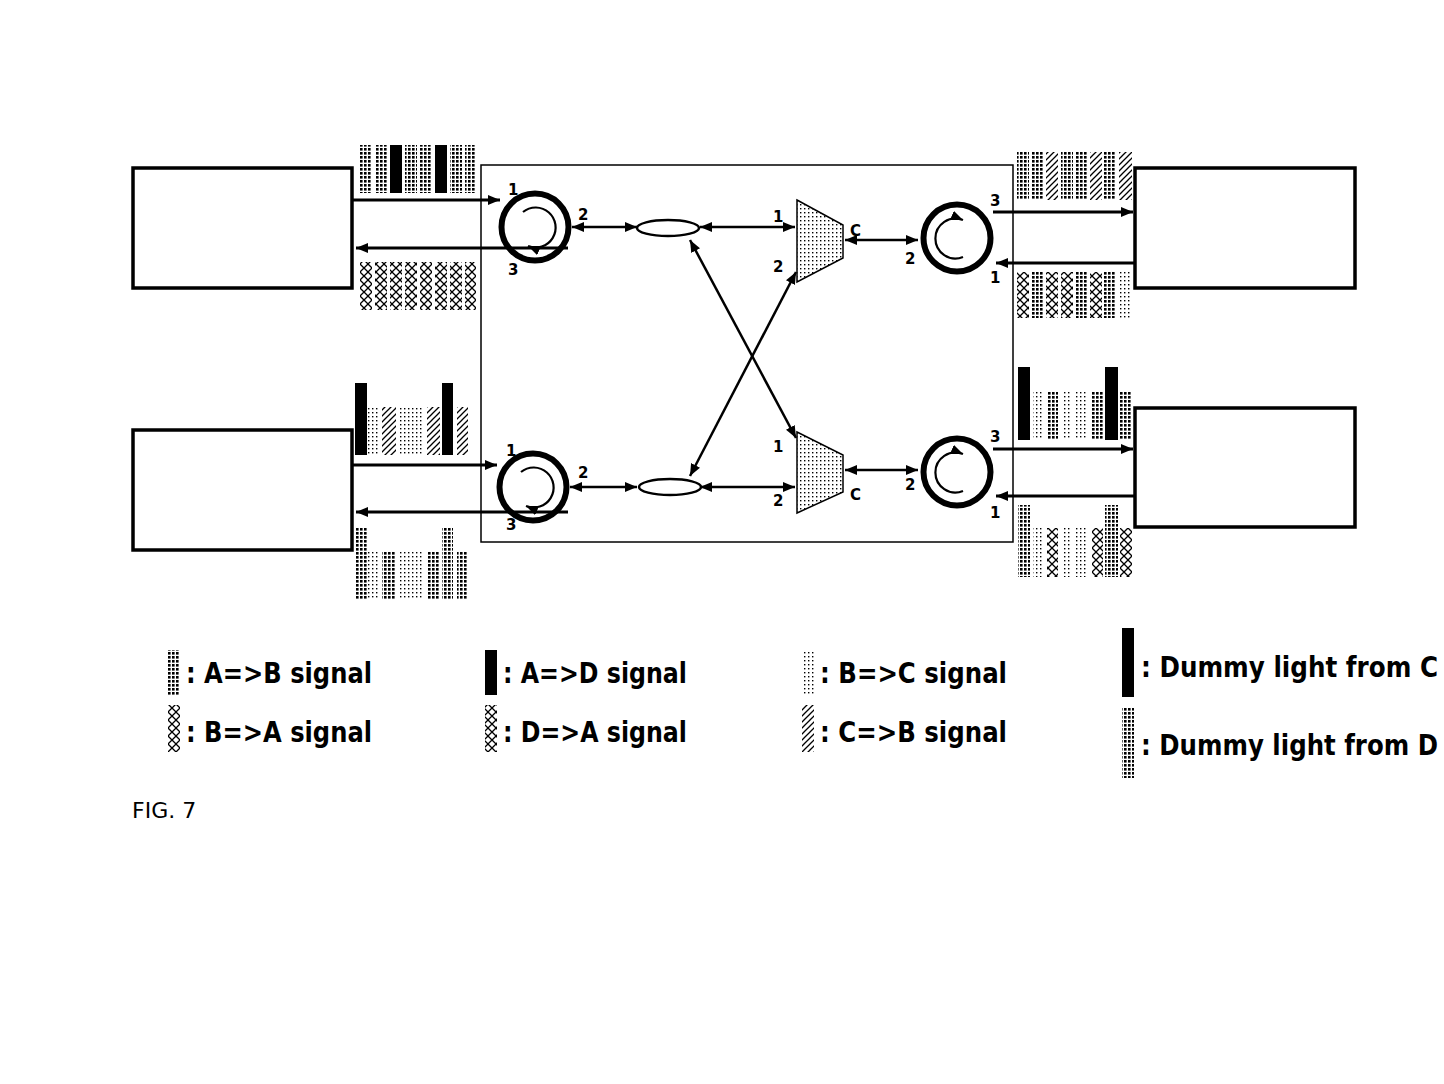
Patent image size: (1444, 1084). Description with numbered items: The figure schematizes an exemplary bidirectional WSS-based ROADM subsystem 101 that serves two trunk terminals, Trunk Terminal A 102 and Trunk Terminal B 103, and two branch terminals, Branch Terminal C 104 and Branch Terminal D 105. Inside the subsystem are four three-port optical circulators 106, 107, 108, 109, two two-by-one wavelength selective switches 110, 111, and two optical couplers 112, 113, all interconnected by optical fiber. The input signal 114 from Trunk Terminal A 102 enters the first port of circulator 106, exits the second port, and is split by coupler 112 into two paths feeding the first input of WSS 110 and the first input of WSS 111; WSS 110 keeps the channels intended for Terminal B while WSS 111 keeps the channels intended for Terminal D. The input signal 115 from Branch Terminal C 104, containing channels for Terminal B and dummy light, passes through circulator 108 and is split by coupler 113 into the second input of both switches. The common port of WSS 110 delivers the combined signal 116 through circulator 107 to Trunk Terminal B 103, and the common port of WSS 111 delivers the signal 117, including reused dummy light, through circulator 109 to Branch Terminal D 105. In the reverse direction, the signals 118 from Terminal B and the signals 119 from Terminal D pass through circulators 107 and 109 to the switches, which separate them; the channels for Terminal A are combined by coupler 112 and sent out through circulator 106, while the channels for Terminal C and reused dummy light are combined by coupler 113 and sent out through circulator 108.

The bidirectional WSS-based ROADM subsystem 101 is at (665, 180).
The Trunk Terminal A 102 is at (258, 186).
The Trunk Terminal B 103 is at (1325, 188).
The Branch Terminal C 104 is at (213, 452).
The Branch Terminal D 105 is at (1338, 427).
The optical circulator 106 is at (542, 240).
The optical circulator 107 is at (938, 261).
The optical circulator 108 is at (537, 468).
The optical circulator 109 is at (950, 458).
The 2×1 WSS 110 is at (836, 257).
The 2×1 WSS 111 is at (830, 453).
The optical coupler 112 is at (672, 236).
The optical coupler 113 is at (670, 480).
The input signal from Trunk Terminal A 114 is at (430, 138).
The input signal from Branch Terminal C 115 is at (412, 395).
The combined signal to Trunk Terminal B 116 is at (1102, 148).
The signal to Branch Terminal D 117 is at (1137, 388).
The signals from Trunk Terminal B 118 is at (1137, 304).
The signals from Branch Terminal D 119 is at (1137, 558).